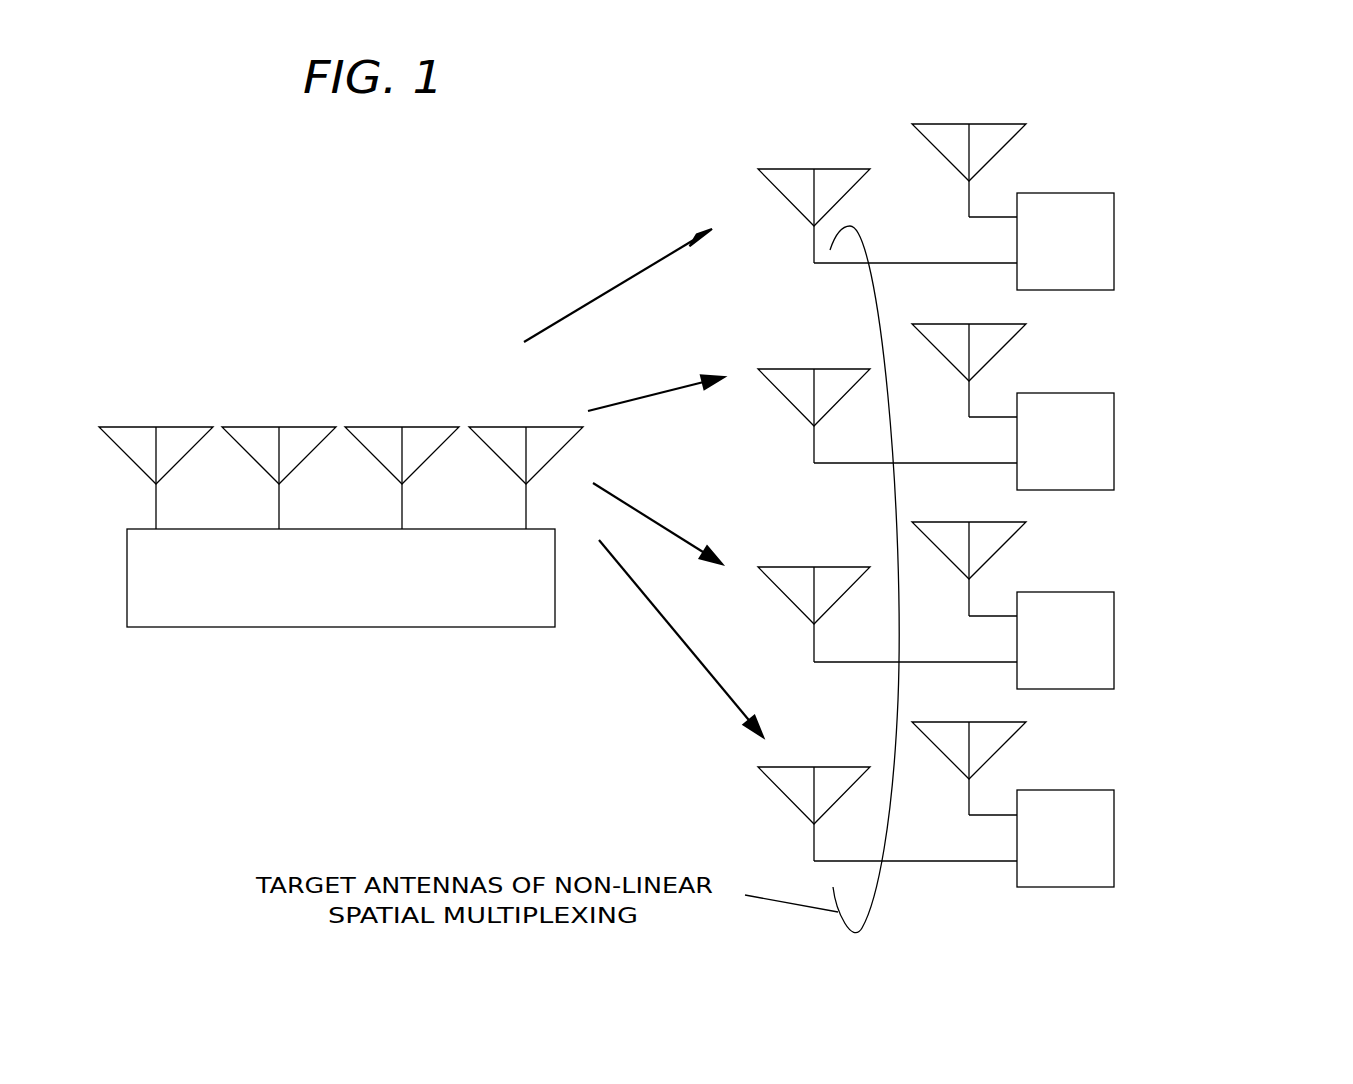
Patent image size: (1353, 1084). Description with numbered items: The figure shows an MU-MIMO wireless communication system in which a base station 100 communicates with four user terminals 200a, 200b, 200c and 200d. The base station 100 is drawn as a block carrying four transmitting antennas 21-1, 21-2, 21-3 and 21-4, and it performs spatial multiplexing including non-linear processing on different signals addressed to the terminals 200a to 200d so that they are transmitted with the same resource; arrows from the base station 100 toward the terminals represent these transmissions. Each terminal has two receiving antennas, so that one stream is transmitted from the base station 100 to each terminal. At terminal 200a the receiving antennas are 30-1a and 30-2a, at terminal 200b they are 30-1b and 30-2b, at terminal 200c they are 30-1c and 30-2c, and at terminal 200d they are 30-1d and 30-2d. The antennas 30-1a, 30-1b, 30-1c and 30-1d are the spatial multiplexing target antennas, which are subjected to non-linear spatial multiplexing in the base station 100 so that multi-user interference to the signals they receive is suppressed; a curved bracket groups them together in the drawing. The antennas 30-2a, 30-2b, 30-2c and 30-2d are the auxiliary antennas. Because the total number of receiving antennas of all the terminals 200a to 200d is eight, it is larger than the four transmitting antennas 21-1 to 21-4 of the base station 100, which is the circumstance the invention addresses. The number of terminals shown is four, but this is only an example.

The transmitting antenna 21-1 is at (132, 430).
The transmitting antenna 21-2 is at (262, 430).
The transmitting antenna 21-3 is at (377, 430).
The transmitting antenna 21-4 is at (488, 430).
The base station 100 is at (330, 618).
The spatial multiplexing target antenna 30-1a is at (835, 175).
The auxiliary antenna 30-2a is at (935, 139).
The terminal 200a is at (1152, 193).
The spatial multiplexing target antenna 30-1b is at (835, 377).
The auxiliary antenna 30-2b is at (1000, 322).
The terminal 200b is at (1150, 398).
The spatial multiplexing target antenna 30-1c is at (837, 574).
The auxiliary antenna 30-2c is at (983, 527).
The terminal 200c is at (1150, 596).
The spatial multiplexing target antenna 30-1d is at (847, 770).
The auxiliary antenna 30-2d is at (1002, 726).
The terminal 200d is at (1150, 795).